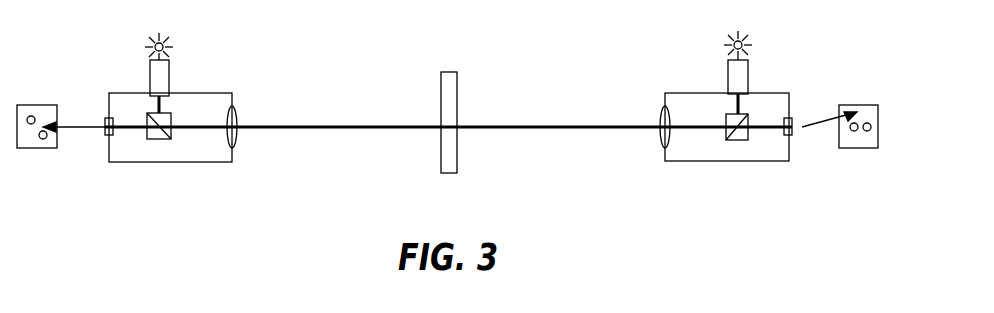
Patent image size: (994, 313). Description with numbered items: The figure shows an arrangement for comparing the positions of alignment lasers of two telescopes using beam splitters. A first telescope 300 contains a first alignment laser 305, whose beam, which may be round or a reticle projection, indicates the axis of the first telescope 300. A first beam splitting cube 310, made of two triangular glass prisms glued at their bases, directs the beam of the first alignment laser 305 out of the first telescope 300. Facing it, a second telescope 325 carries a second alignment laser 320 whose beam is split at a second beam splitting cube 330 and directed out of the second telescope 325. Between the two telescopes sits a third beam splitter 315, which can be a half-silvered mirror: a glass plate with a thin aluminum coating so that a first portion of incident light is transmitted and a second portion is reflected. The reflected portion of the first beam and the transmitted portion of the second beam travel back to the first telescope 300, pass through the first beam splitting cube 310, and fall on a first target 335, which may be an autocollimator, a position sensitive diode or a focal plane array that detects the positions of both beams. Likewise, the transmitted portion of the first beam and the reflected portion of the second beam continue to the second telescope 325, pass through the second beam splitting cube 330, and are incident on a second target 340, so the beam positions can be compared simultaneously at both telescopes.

The first telescope 300 is at (178, 162).
The first alignment laser 305 is at (168, 78).
The first beam splitting cube 310 is at (158, 139).
The third beam splitter 315 is at (450, 72).
The second alignment laser 320 is at (748, 78).
The second telescope 325 is at (753, 161).
The second beam splitting cube 330 is at (740, 140).
The first target 335 is at (38, 105).
The second target 340 is at (858, 105).